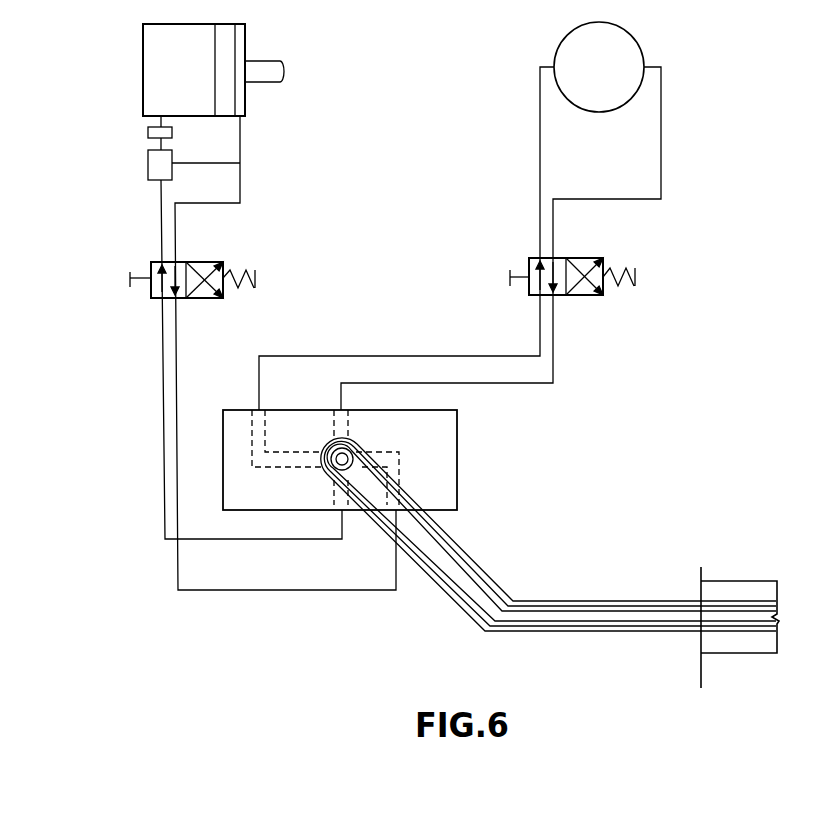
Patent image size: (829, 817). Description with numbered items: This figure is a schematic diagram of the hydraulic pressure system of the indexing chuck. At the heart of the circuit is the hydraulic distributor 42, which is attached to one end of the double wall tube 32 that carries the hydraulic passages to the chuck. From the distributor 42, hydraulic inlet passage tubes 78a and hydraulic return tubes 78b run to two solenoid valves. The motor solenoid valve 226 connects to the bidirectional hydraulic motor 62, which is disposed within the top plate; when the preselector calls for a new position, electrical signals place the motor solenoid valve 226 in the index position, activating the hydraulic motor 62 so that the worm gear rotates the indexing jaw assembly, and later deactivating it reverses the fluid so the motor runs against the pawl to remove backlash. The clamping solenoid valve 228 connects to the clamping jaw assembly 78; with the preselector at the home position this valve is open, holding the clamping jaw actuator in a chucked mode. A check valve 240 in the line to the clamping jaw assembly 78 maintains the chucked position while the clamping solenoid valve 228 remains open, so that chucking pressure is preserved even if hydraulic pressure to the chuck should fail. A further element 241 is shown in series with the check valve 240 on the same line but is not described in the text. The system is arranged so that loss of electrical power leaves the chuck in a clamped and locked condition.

The clamping jaw assembly 78 is at (199, 83).
The connector 241 is at (148, 134).
The check valve 240 is at (148, 168).
The hydraulic inlet passage tubes 78a is at (379, 355).
The hydraulic return tubes 78b is at (517, 383).
The clamping solenoid valve 228 is at (208, 298).
The motor solenoid valve 226 is at (585, 297).
The hydraulic motor 62 is at (628, 33).
The hydraulic distributor 42 is at (458, 460).
The double wall tube 32 is at (615, 601).